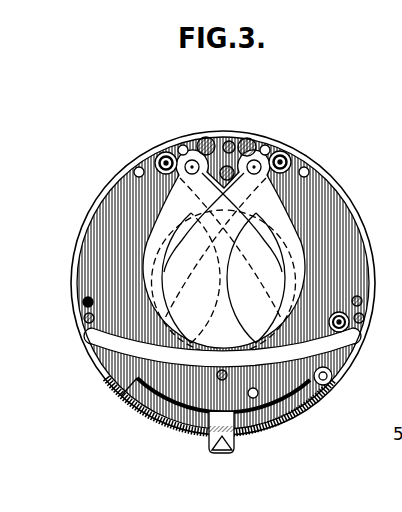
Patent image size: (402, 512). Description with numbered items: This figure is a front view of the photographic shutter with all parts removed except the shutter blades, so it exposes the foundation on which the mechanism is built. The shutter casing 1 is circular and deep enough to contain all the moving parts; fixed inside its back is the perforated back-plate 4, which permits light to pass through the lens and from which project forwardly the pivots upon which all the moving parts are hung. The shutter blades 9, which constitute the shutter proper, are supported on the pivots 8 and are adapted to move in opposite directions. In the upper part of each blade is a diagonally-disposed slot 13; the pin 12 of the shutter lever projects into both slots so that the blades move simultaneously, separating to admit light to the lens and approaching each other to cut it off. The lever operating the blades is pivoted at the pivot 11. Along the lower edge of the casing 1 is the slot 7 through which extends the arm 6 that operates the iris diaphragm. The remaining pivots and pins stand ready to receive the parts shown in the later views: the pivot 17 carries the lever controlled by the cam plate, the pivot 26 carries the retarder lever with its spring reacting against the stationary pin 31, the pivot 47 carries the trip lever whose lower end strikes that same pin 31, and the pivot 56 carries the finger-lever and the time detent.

The shutter casing 1 is at (329, 173).
The back-plate 4 is at (110, 234).
The arm 6 is at (220, 456).
The slot 7 is at (153, 420).
The pivots 8 is at (191, 160).
The shutter blades 9 is at (227, 266).
The pivot of shutter lever 11 is at (283, 157).
The pin 12 is at (227, 140).
The diagonally-disposed slots 13 is at (212, 142).
The pivot 17 is at (351, 327).
The pivot of retarder lever 26 is at (221, 382).
The pin 31 is at (271, 410).
The pivot of trip lever 47 is at (324, 386).
The pivot 56 is at (163, 156).